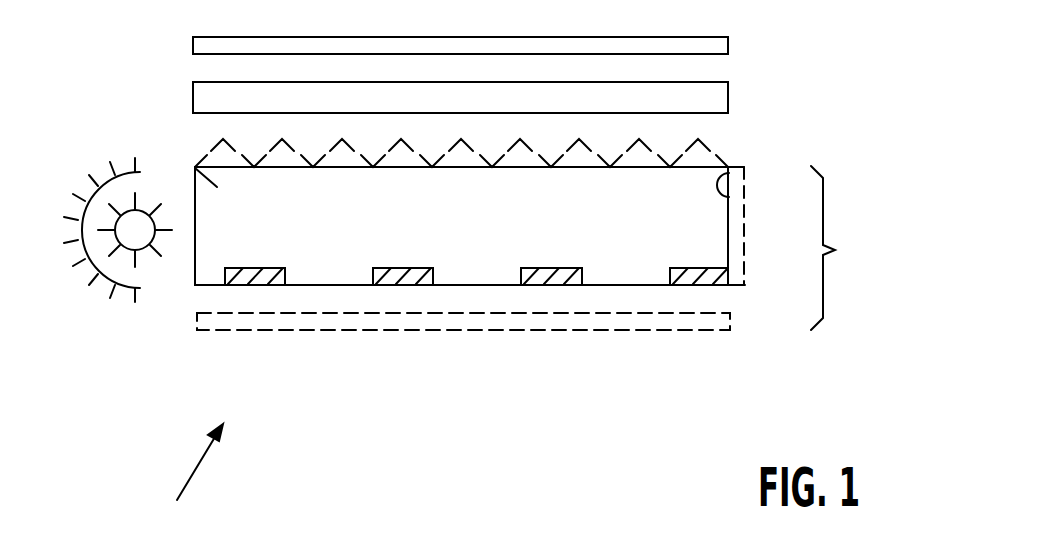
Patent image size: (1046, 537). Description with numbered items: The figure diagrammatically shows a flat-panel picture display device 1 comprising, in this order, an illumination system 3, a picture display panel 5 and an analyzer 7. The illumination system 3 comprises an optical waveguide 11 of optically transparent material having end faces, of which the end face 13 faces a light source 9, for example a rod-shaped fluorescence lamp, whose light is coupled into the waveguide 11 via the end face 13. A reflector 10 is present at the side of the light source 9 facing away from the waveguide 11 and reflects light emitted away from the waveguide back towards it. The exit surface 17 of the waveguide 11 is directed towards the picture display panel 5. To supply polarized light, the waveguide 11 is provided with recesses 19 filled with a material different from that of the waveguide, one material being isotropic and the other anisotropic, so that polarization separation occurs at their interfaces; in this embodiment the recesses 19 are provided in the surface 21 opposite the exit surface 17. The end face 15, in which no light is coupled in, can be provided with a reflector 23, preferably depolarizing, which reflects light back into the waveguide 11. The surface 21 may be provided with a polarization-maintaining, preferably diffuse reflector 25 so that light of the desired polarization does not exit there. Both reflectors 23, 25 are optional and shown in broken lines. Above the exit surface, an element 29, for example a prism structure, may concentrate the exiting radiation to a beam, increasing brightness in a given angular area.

The picture display device 1 is at (177, 522).
The illumination system 3 is at (835, 250).
The picture display panel 5 is at (720, 97).
The analyzer 7 is at (720, 43).
The light source 9 is at (144, 243).
The reflector 10 is at (112, 293).
The optical waveguide 11 is at (195, 170).
The end face 13 is at (195, 183).
The end face 15 is at (730, 171).
The exit surface 17 is at (530, 166).
The recesses 19 is at (387, 267).
The surface 21 is at (455, 287).
The reflector 23 is at (737, 268).
The reflector 25 is at (645, 321).
The element concentrating the radiation to a beam 29 is at (700, 156).